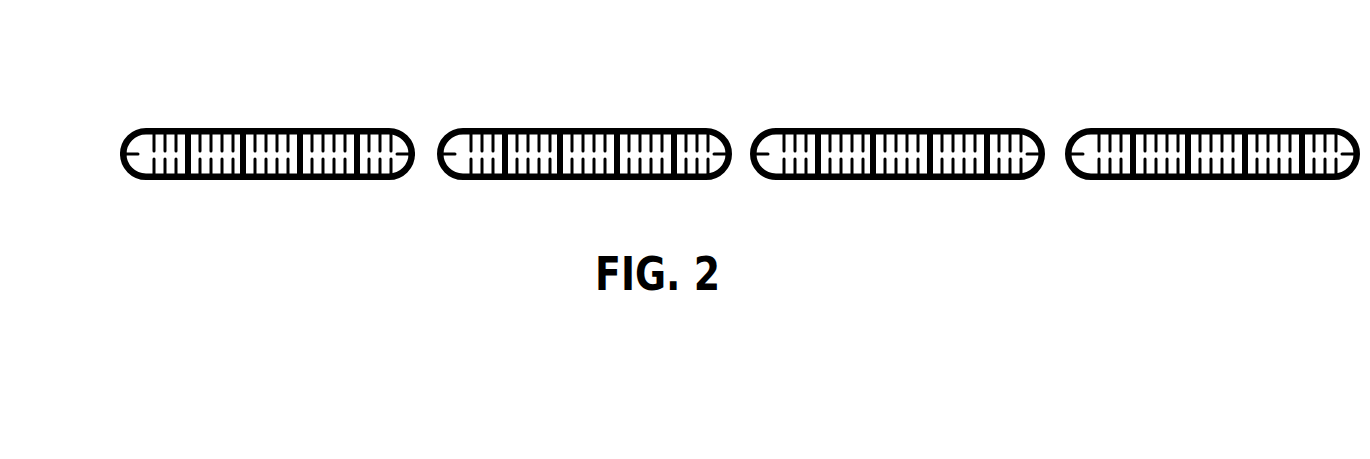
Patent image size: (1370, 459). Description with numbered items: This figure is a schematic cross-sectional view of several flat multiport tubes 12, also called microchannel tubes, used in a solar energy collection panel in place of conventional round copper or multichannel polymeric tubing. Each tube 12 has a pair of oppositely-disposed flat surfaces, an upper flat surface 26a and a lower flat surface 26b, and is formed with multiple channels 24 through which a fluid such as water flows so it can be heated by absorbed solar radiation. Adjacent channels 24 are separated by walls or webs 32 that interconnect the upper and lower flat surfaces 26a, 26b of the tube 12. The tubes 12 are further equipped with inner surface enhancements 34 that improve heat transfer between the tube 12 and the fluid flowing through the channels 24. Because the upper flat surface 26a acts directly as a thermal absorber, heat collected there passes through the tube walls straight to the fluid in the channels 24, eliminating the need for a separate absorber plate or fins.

The flat multiport tube 12 is at (740, 137).
The channels 24 is at (637, 153).
The upper flat surface 26a is at (313, 128).
The lower flat surface 26b is at (300, 182).
The webs 32 is at (925, 155).
The inner surface enhancements 34 is at (1212, 143).